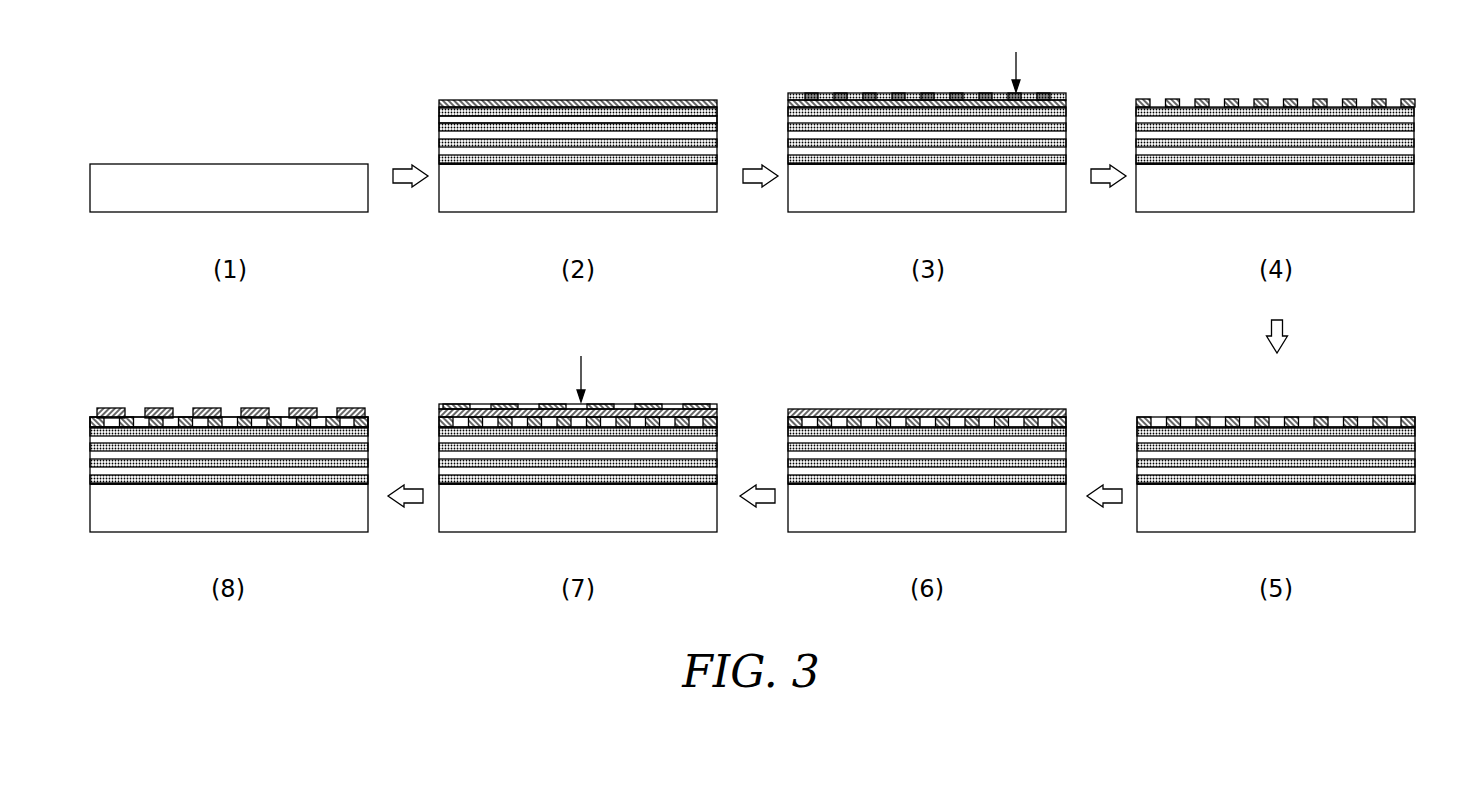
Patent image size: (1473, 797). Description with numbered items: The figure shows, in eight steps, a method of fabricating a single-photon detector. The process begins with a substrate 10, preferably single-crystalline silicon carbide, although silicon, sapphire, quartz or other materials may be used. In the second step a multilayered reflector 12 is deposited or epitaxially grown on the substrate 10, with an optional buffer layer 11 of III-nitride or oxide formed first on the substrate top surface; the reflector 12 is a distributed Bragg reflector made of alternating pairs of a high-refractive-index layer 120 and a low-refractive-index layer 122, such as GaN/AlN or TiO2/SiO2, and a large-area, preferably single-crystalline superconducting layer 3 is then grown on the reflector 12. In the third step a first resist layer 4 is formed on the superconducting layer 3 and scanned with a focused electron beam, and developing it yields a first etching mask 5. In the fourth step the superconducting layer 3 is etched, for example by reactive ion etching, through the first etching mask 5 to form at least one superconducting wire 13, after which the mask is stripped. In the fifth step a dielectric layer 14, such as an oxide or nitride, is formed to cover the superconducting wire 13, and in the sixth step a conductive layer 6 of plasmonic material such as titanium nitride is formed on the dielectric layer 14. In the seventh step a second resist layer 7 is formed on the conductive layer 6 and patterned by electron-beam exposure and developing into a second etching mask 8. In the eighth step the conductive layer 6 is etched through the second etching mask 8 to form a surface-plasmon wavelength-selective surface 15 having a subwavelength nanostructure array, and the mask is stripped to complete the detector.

The superconducting layer 3 is at (622, 99).
The first resist layer 4 is at (1015, 58).
The first etching mask 5 is at (1056, 92).
The conductive layer 6 is at (991, 410).
The second resist layer 7 is at (580, 365).
The second etching mask 8 is at (696, 404).
The substrate 10 is at (237, 177).
The buffer layer 11 is at (717, 164).
The reflector 12 is at (718, 107).
The superconducting wire 13 is at (1402, 98).
The dielectric layer 14 is at (1333, 419).
The surface-plasmon wavelength-selective surface 15 is at (355, 408).
The high-refractive-index layer 120 is at (439, 119).
The low-refractive-index layer 122 is at (439, 127).